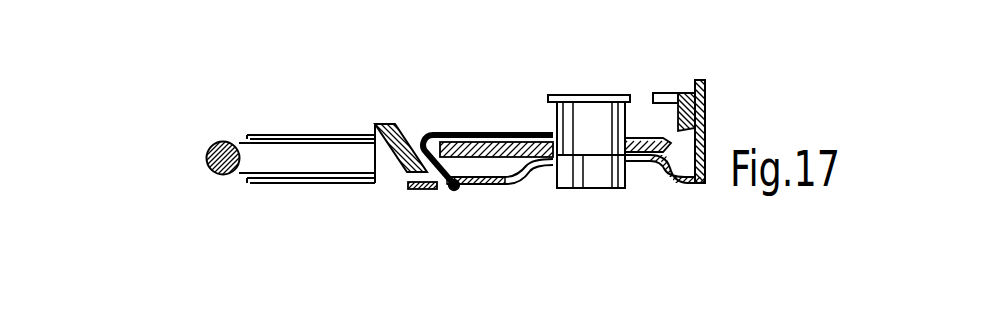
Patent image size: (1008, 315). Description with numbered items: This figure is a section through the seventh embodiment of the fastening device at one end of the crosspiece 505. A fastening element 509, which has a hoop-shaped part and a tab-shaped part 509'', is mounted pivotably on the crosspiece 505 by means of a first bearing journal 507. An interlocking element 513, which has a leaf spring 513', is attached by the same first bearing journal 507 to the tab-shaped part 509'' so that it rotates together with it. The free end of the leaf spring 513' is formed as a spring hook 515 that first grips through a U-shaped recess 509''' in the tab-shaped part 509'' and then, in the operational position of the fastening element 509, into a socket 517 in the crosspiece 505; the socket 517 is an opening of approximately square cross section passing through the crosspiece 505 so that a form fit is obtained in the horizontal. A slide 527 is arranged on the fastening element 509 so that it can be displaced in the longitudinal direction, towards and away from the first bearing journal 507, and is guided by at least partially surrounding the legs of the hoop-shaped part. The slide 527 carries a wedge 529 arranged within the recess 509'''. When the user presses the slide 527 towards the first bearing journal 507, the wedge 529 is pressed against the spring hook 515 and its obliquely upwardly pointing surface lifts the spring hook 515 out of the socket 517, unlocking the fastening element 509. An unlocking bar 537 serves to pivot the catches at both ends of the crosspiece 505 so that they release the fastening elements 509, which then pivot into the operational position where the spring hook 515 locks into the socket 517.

The crosspiece 505 is at (513, 179).
The first bearing journal 507 is at (588, 130).
The fastening element 509 is at (347, 219).
The tab-shaped part 509'' is at (689, 206).
The U-shaped recess 509''' is at (403, 111).
The interlocking element 513 is at (488, 96).
The leaf spring 513' is at (492, 92).
The spring hook 515 is at (452, 190).
The socket 517 is at (468, 190).
The slide 527 is at (296, 128).
The wedge 529 is at (407, 172).
The unlocking bar 537 is at (683, 92).